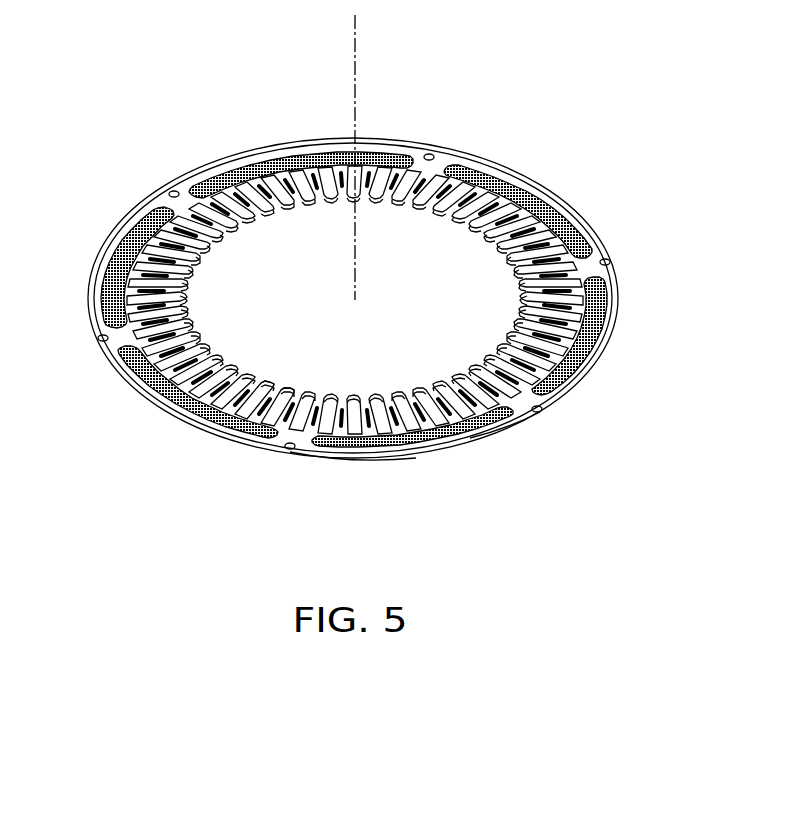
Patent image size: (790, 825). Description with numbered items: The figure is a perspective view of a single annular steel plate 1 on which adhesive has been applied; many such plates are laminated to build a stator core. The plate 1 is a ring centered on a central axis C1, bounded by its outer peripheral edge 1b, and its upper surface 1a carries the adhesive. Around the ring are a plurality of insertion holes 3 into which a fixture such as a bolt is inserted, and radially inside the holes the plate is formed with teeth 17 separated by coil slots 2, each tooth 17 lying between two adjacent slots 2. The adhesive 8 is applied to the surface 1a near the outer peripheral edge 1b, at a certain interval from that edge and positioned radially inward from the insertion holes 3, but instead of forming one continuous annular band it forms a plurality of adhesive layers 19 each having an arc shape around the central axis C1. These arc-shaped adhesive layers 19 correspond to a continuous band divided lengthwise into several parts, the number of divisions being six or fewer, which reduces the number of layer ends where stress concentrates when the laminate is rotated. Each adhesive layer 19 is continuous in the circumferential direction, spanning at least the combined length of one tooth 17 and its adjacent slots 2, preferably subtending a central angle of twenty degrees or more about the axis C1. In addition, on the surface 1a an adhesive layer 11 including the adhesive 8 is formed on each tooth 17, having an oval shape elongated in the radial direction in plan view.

The central axis C1 is at (360, 72).
The annular plate 1 is at (533, 177).
The surface 1a is at (497, 430).
The outer peripheral edge 1b is at (400, 457).
The coil slot 2 is at (185, 390).
The insertion hole 3 is at (433, 156).
The adhesive 8 is at (382, 299).
The adhesive layer 11 is at (228, 381).
The tooth 17 is at (268, 383).
The adhesive layer 19 is at (597, 238).